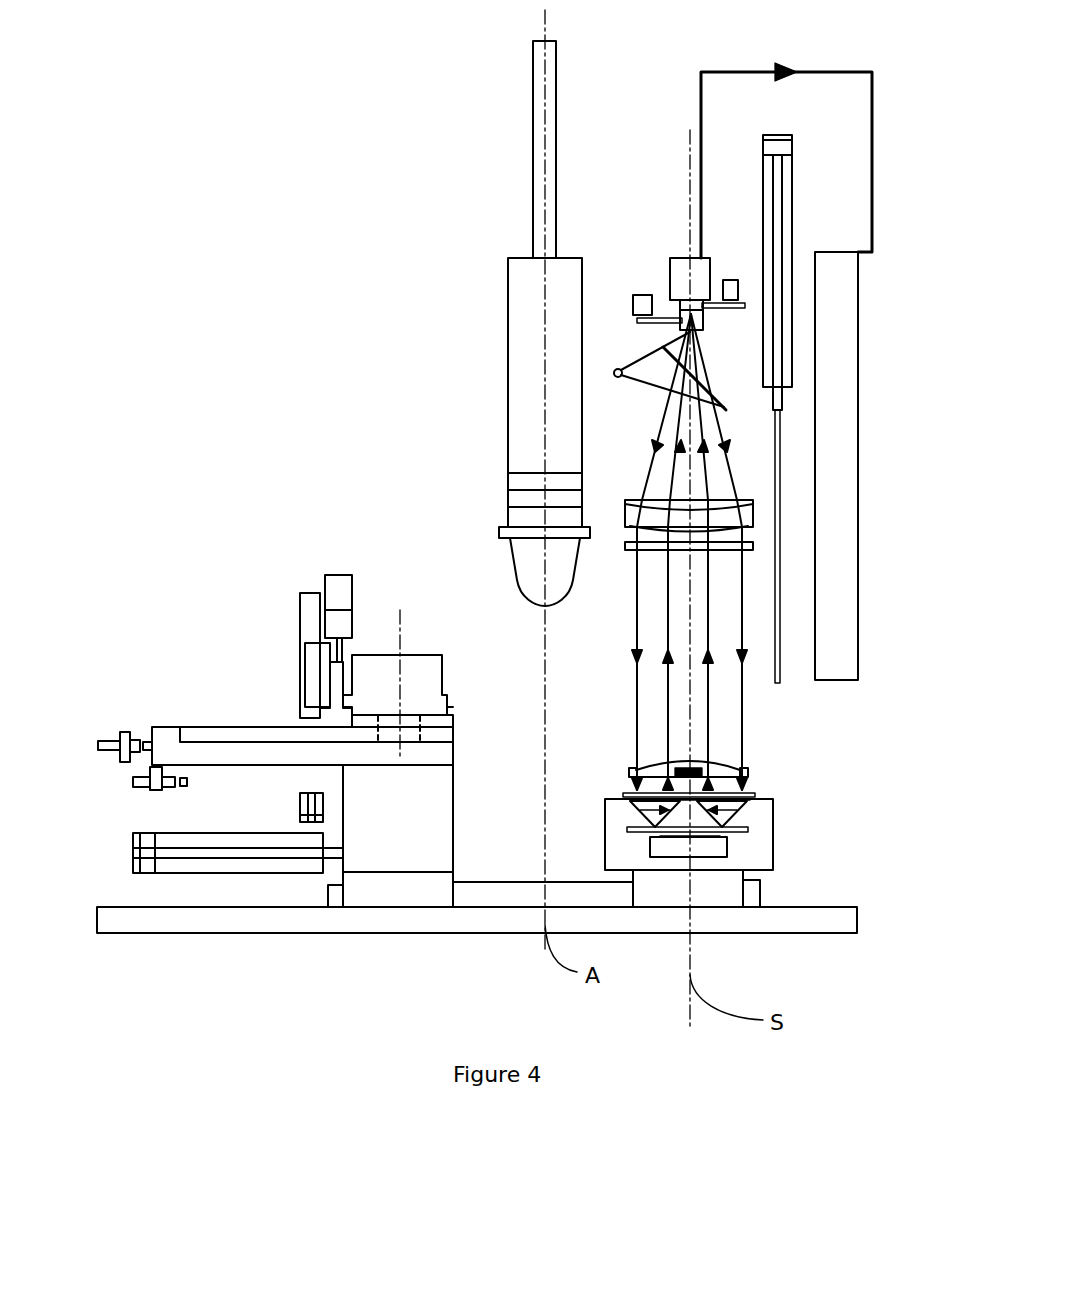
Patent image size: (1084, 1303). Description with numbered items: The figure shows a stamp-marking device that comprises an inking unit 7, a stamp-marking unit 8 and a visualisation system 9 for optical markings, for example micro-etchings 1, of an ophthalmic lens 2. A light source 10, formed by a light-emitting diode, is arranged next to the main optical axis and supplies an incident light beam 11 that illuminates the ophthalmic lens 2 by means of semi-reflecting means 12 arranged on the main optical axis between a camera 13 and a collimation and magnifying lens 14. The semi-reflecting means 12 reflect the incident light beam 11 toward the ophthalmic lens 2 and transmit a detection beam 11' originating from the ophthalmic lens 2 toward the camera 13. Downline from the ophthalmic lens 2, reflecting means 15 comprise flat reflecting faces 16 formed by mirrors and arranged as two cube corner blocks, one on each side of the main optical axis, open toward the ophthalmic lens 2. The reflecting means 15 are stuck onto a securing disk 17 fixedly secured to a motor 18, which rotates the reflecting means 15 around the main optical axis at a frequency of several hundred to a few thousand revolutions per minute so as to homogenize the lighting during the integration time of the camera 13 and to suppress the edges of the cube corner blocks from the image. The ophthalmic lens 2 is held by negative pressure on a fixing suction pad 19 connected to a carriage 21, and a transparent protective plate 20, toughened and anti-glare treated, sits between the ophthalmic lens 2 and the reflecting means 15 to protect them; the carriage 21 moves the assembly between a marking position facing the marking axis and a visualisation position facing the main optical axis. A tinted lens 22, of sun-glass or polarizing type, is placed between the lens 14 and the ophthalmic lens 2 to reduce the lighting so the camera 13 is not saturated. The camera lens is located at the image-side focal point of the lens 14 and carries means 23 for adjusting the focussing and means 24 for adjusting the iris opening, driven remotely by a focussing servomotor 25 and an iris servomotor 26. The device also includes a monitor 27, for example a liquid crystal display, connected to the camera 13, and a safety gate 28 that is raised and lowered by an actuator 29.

The micro-etchings 1 is at (655, 762).
The ophthalmic lens 2 is at (748, 771).
The inking unit 7 is at (330, 510).
The stamp-marking unit 8 is at (452, 357).
The visualisation system 9 is at (638, 158).
The light source 10 is at (618, 377).
The incident light beam 11 is at (671, 420).
The detection beam 11' is at (669, 658).
The semi-reflecting means 12 is at (721, 402).
The camera 13 is at (681, 262).
The collimation and magnifying lens 14 is at (740, 500).
The reflecting means 15 is at (758, 815).
The flat reflecting faces 16 is at (640, 812).
The securing disk 17 is at (750, 831).
The motor 18 is at (728, 848).
The fixing suction pad 19 is at (705, 768).
The transparent protective plate 20 is at (756, 795).
The carriage 21 is at (720, 883).
The tinted lens 22 is at (631, 552).
The focussing adjustment means 23 is at (706, 312).
The iris opening adjustment means 24 is at (680, 325).
The focussing servomotor 25 is at (741, 270).
The iris servomotor 26 is at (633, 306).
The monitor 27 is at (848, 318).
The safety gate 28 is at (778, 684).
The actuator 29 is at (794, 192).